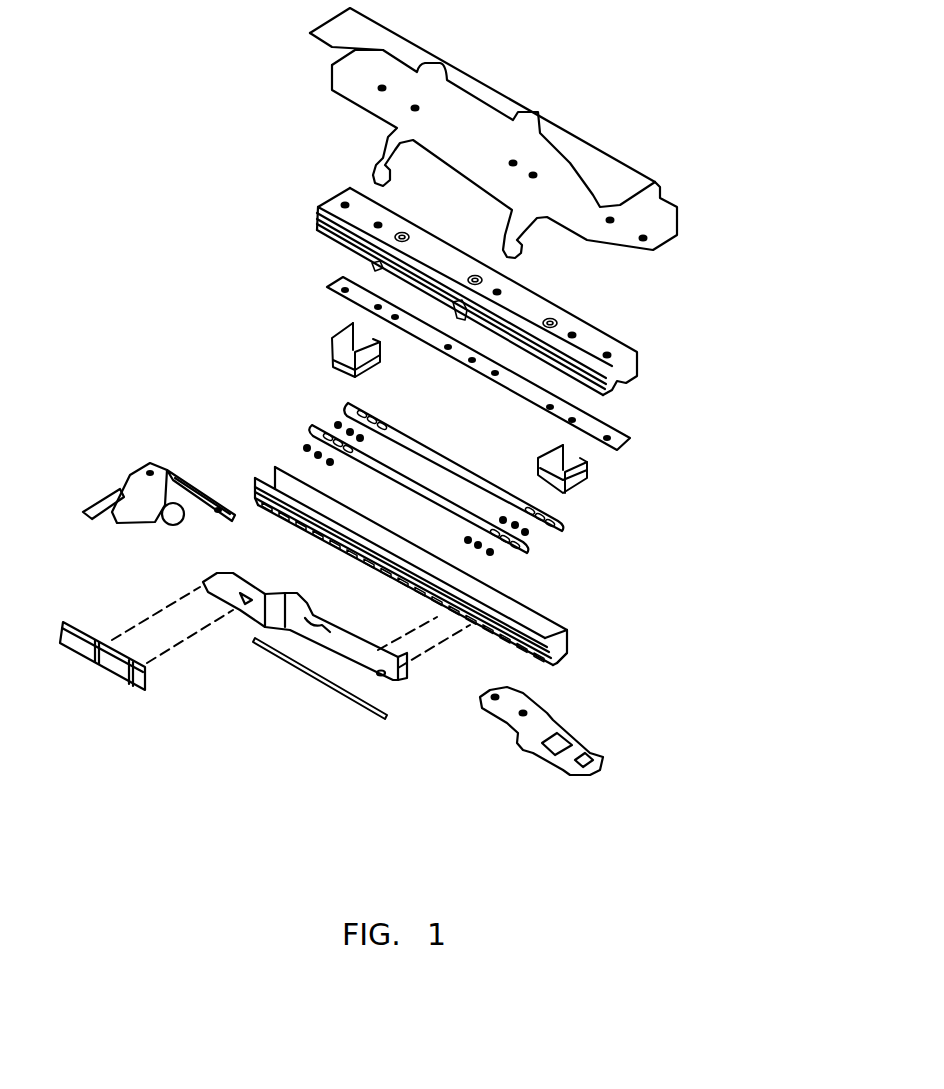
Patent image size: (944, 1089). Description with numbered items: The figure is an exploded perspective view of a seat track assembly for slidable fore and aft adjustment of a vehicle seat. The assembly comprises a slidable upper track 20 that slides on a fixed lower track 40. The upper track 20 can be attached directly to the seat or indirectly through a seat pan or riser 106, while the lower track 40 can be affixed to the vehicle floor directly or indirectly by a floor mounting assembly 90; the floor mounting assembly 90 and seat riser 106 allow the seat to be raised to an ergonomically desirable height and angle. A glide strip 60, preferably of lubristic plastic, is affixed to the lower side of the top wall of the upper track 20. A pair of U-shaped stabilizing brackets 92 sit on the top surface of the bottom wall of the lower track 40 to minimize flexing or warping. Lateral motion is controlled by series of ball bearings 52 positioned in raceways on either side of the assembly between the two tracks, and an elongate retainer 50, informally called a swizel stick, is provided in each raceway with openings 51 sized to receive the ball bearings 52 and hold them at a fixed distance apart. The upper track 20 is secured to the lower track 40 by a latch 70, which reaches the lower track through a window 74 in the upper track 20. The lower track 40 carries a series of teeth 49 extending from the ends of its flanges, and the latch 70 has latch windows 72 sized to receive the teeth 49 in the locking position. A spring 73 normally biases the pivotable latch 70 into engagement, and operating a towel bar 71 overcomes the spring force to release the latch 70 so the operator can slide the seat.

The seat riser 106 is at (500, 97).
The upper track 20 is at (508, 291).
The window 74 is at (448, 303).
The glide strip 60 is at (603, 428).
The U-shaped stabilizing brackets 92 is at (332, 337).
The elongate retainer 50 is at (440, 482).
The openings 51 is at (548, 510).
The ball bearings 52 is at (338, 425).
The lower track 40 is at (446, 578).
The teeth 49 is at (513, 647).
The latch 70 is at (328, 657).
The towel bar 71 is at (107, 667).
The latch windows 72 is at (403, 683).
The spring 73 is at (323, 680).
The floor mounting assembly 90 is at (160, 512).